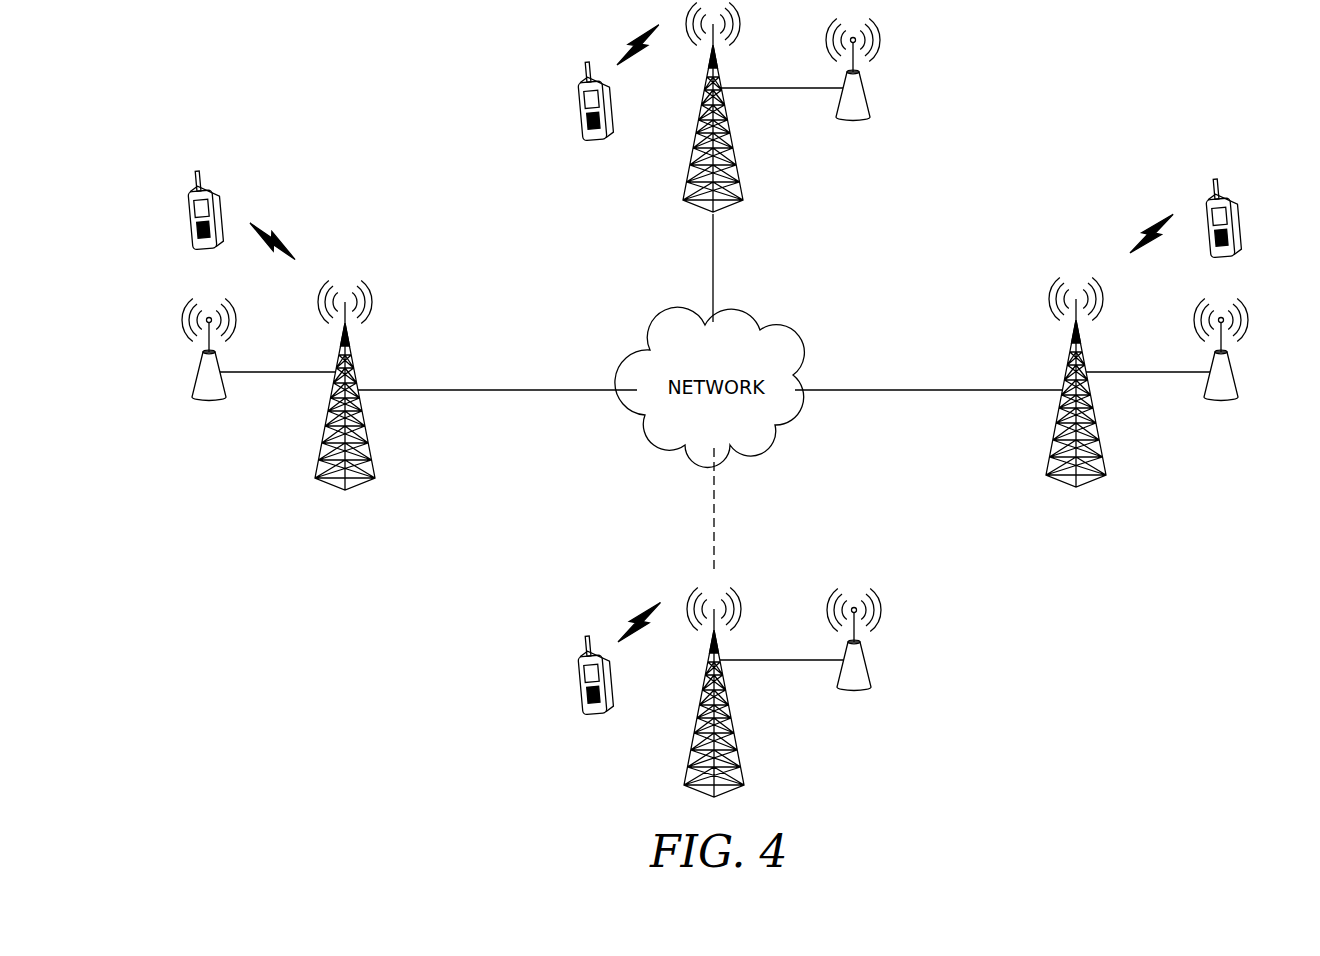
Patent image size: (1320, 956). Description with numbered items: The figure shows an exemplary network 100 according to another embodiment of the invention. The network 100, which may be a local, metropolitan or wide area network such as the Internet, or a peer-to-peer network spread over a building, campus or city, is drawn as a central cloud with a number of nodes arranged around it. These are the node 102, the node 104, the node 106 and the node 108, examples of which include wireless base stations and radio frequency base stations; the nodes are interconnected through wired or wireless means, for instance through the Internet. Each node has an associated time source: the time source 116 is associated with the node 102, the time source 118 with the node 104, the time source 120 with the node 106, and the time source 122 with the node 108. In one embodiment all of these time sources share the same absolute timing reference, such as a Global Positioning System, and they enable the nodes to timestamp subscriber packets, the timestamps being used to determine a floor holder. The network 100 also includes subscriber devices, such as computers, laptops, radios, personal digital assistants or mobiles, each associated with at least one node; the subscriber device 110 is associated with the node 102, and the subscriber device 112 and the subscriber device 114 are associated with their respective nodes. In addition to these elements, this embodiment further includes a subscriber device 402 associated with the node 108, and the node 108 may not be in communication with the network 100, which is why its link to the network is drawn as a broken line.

The network 100 is at (1150, 740).
The node 102 is at (322, 440).
The node 104 is at (737, 168).
The node 106 is at (1100, 444).
The node 108 is at (690, 752).
The subscriber device 110 is at (200, 190).
The subscriber device 112 is at (586, 82).
The subscriber device 114 is at (1238, 200).
The time source 116 is at (195, 376).
The time source 118 is at (868, 90).
The time source 120 is at (1238, 376).
The time source 122 is at (872, 660).
The subscriber device 402 is at (584, 658).